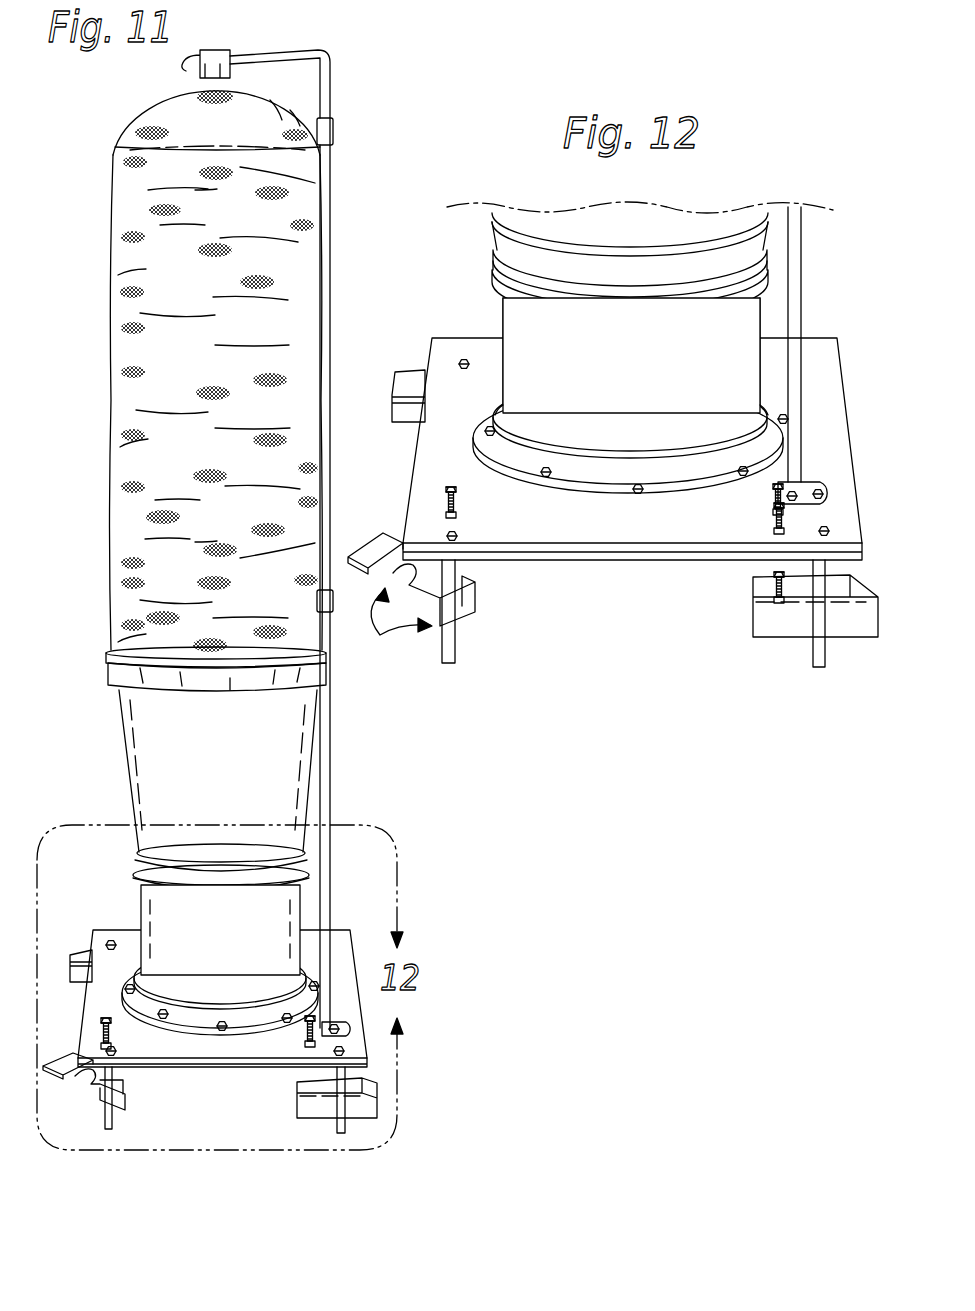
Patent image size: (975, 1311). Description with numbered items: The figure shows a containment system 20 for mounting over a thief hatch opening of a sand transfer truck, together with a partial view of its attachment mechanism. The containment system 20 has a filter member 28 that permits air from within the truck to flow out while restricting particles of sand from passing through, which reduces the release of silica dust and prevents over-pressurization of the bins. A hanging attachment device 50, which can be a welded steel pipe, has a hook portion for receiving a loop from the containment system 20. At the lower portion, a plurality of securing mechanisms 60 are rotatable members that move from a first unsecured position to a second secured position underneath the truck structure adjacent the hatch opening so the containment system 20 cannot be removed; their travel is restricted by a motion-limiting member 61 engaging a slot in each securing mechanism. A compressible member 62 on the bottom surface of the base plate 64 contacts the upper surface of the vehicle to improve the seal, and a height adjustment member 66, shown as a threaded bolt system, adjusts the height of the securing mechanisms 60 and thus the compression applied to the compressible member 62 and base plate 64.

In FIG. 11, the containment system 20 is at (98, 302).
In FIG. 11, the filter member 28 is at (140, 385).
In FIG. 11, the hanging attachment device 50 is at (330, 182).
In FIG. 12, the hanging attachment device 50 is at (803, 291).
In FIG. 11, the securing mechanism 60 is at (76, 955).
In FIG. 12, the securing mechanism 60 is at (412, 373).
In FIG. 11, the motion-limiting member 61 is at (105, 1128).
In FIG. 12, the motion-limiting member 61 is at (452, 652).
In FIG. 11, the compressible member 62 is at (215, 1068).
In FIG. 12, the compressible member 62 is at (634, 560).
In FIG. 11, the base plate 64 is at (350, 1013).
In FIG. 12, the base plate 64 is at (833, 435).
In FIG. 11, the height adjustment member 66 is at (104, 1015).